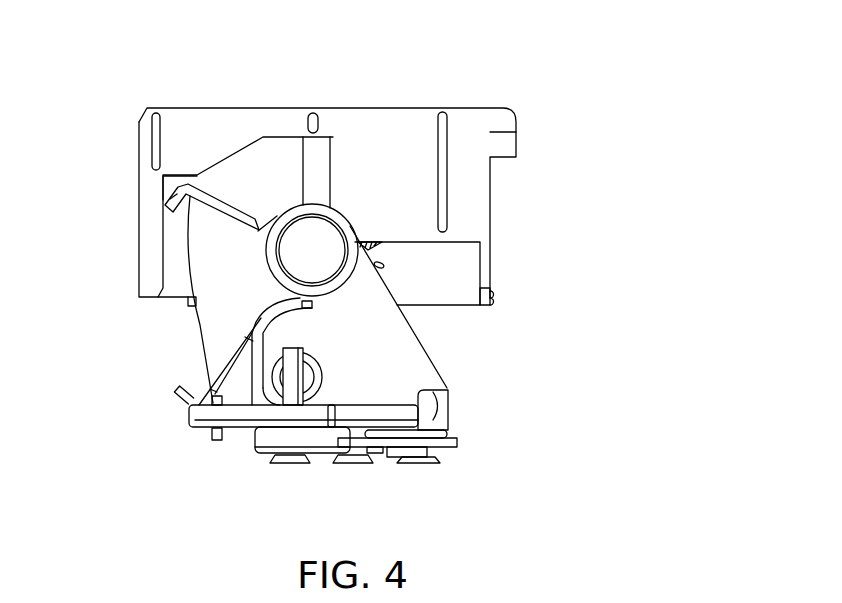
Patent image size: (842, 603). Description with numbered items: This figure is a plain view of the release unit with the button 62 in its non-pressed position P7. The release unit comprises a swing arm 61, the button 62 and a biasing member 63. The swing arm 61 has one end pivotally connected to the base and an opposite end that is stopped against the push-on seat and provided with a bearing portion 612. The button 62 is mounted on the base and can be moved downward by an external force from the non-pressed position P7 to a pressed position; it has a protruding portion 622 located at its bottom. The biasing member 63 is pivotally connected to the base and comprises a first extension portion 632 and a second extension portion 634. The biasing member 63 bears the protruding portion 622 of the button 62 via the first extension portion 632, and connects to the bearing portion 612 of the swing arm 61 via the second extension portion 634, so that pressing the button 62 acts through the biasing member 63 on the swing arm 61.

The swing arm 61 is at (373, 401).
The bearing portion 612 is at (212, 437).
The button 62 is at (381, 155).
The protruding portion 622 is at (183, 182).
The biasing member 63 is at (220, 325).
The first extension portion 632 is at (174, 190).
The second extension portion 634 is at (174, 399).
The non-pressed position P7 is at (475, 98).